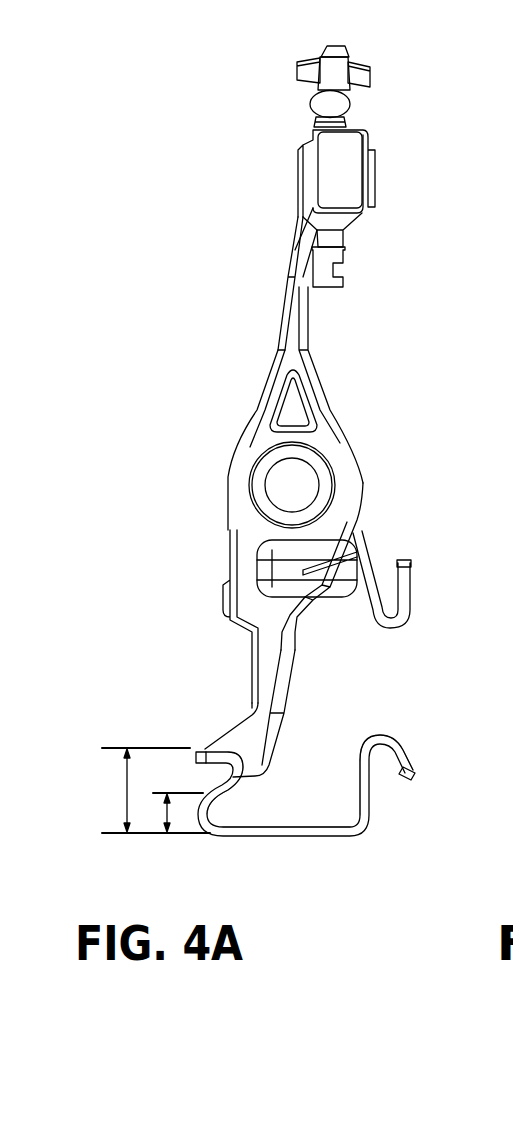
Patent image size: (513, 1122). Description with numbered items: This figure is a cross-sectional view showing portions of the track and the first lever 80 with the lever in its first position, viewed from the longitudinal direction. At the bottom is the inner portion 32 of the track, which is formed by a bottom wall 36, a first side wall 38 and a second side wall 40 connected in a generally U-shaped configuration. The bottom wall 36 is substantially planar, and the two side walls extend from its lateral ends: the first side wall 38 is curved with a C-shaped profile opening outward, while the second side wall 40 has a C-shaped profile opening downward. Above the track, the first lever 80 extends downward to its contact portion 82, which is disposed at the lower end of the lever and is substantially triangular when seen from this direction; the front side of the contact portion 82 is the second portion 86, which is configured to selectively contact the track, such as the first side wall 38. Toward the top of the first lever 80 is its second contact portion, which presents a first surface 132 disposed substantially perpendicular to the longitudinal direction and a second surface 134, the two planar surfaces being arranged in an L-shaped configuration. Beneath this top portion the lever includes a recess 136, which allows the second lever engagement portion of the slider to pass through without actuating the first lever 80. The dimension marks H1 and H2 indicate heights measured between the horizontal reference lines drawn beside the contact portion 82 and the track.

The first lever 80 is at (288, 168).
The first surface 132 is at (322, 266).
The second surface 134 is at (348, 258).
The recess 136 is at (313, 328).
The second portion 86 is at (232, 747).
The contact portion 82 is at (351, 799).
The first side wall 38 is at (215, 790).
The bottom wall 36 is at (290, 831).
The second side wall 40 is at (367, 792).
The inner portion 32 is at (424, 727).
The height H1 is at (167, 817).
The height H2 is at (123, 788).